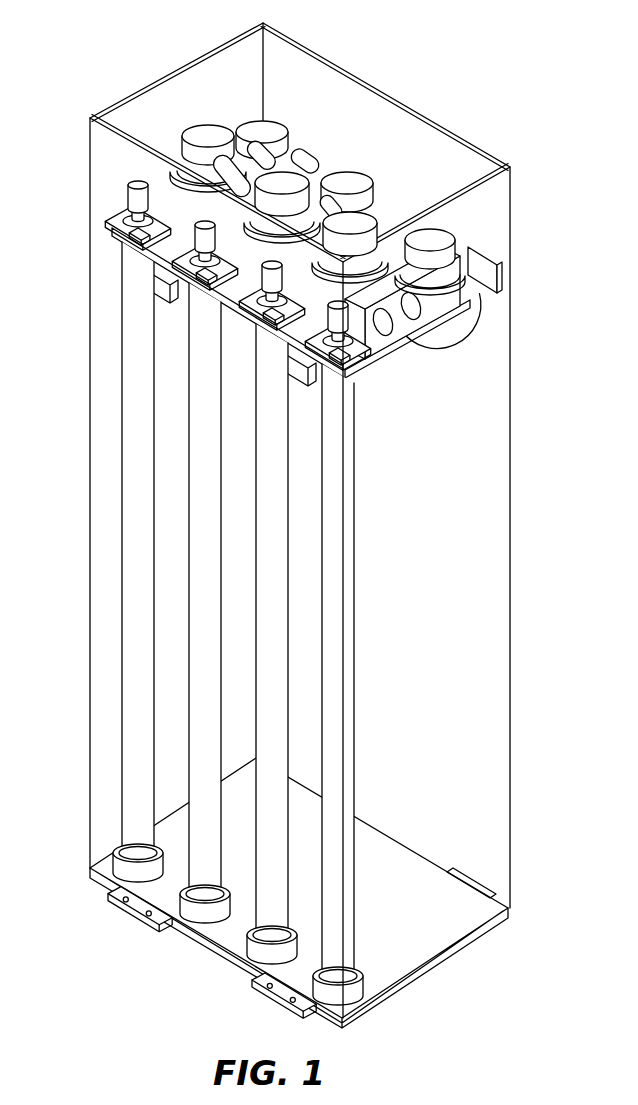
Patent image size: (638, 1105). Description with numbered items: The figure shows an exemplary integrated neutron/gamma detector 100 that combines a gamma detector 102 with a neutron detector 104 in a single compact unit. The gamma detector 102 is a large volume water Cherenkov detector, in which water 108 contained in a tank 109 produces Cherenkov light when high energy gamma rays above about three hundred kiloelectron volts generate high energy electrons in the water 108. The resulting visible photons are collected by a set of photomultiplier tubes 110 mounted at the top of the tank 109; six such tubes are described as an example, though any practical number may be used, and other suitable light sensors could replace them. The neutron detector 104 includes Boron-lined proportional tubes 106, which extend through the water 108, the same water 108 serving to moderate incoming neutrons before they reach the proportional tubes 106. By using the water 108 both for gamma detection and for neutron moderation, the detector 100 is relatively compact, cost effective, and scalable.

The neutron/gamma detector 100 is at (304, 525).
The gamma detector 102 is at (300, 525).
The neutron detector 104 is at (191, 623).
The proportional tubes 106 is at (207, 659).
The water 108 is at (402, 614).
The tank 109 is at (412, 919).
The photomultiplier tubes 110 is at (339, 180).